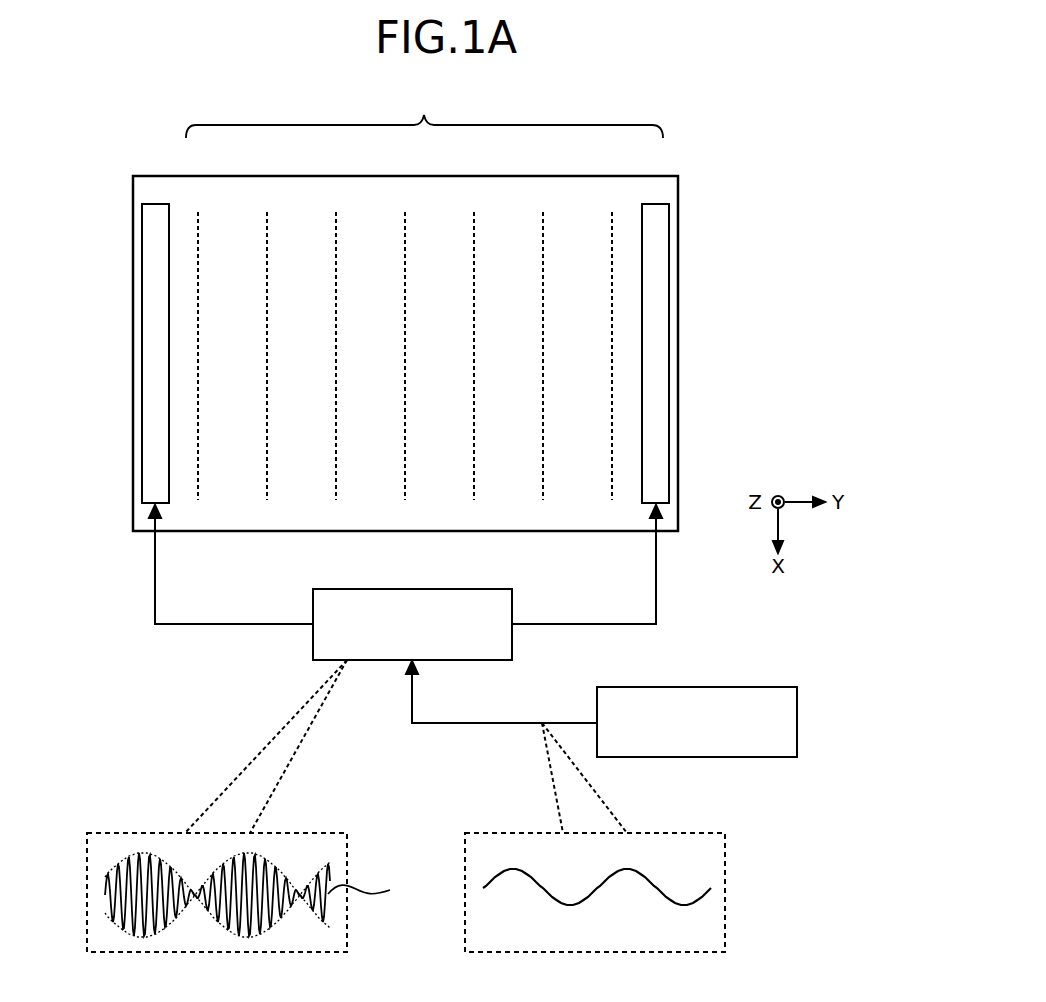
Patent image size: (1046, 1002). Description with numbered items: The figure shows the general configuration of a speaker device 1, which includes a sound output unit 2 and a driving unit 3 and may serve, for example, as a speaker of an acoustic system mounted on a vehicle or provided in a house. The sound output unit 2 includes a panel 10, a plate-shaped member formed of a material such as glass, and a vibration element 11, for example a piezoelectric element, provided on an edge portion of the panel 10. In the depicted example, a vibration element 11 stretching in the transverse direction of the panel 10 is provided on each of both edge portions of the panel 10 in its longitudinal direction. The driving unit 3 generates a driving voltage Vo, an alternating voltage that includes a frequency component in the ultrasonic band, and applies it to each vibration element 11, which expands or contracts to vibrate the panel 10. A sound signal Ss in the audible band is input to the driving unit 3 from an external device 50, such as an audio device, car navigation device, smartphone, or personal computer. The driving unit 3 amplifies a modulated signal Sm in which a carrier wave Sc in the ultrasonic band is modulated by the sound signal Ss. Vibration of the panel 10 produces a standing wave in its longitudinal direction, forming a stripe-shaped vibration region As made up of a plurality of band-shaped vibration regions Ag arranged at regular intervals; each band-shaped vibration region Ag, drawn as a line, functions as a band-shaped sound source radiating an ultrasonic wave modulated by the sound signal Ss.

The speaker device 1 is at (776, 146).
The sound output unit 2 is at (716, 188).
The panel 10 is at (678, 210).
The vibration element 11 is at (155, 383).
The driving unit 3 is at (490, 589).
The external device 50 is at (772, 687).
The stripe-shaped vibration region As is at (424, 111).
The band-shaped vibration region Ag is at (199, 219).
The driving voltage Vo is at (312, 833).
The sound signal Ss is at (130, 862).
The carrier wave Sc is at (373, 890).
The modulated signal Sm is at (312, 941).